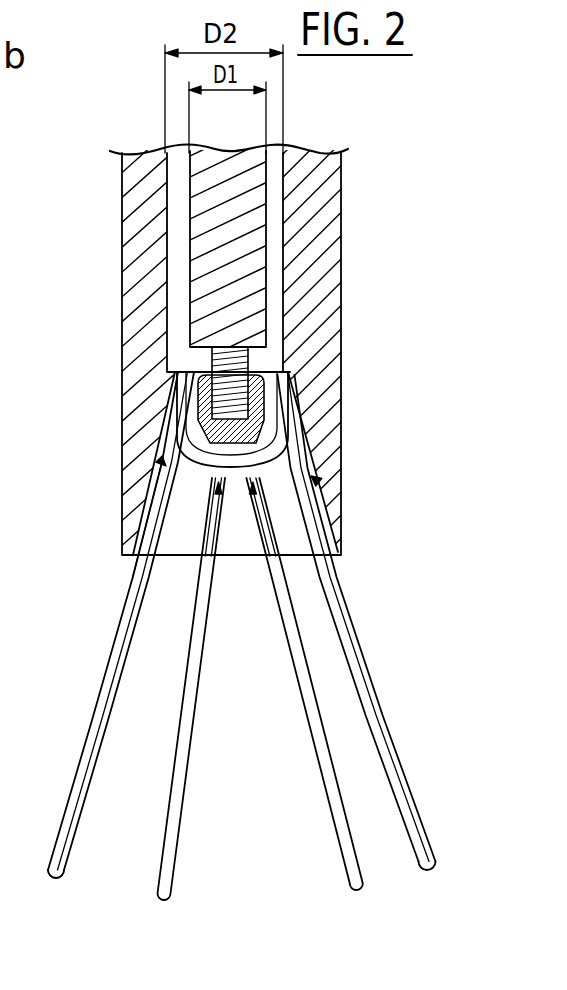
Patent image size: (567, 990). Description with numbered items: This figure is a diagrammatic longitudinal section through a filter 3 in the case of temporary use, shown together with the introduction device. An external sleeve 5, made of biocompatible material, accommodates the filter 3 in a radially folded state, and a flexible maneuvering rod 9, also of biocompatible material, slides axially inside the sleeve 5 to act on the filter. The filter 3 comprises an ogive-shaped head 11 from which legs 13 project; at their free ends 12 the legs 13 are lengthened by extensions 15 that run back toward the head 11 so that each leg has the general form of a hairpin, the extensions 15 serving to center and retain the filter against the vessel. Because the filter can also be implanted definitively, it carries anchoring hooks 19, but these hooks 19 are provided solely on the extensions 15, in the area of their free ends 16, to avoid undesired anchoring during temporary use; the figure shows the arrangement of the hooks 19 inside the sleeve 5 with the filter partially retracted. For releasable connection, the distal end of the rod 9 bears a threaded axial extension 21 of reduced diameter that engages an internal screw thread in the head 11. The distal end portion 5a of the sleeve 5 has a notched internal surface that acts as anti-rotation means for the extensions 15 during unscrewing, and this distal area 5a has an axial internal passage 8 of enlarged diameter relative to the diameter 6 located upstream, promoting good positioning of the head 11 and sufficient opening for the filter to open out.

The filter 3 is at (384, 695).
The external sleeve 5 is at (318, 198).
The distal end portion of the sleeve 5a is at (373, 347).
The internal diameter upstream of the distal area 6 is at (276, 170).
The axial internal passage 8 is at (178, 557).
The maneuvering rod 9 is at (232, 170).
The head 11 is at (196, 418).
The free ends of the legs 12 is at (55, 880).
The legs 13 is at (101, 735).
The extensions 15 is at (93, 718).
The free ends of the extensions 16 is at (143, 520).
The hooks 19 is at (160, 461).
The threaded axial extension 21 is at (232, 372).